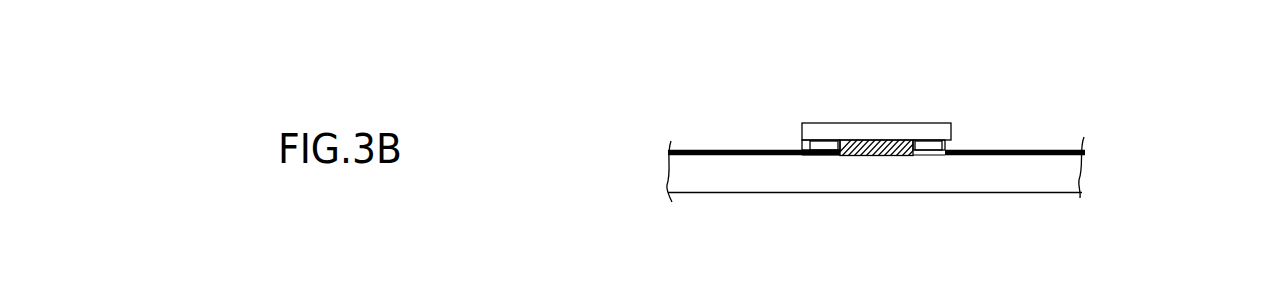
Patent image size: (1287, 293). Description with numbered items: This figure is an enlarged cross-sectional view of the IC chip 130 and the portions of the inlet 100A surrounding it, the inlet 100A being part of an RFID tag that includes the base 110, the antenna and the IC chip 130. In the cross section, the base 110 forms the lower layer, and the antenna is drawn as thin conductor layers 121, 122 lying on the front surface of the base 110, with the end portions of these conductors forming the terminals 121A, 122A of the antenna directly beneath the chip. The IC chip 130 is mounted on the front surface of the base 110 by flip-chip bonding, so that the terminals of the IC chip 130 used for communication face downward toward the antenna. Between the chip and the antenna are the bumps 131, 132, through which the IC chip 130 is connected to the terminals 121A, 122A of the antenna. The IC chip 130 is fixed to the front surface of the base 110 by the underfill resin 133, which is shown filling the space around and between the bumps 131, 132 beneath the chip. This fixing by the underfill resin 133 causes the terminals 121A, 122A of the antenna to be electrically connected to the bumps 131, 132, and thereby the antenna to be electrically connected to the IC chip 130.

The inlet 100A is at (1076, 127).
The base 110 is at (1057, 170).
The first wiring electrode 121 is at (722, 149).
The second wiring electrode 122 is at (1047, 148).
The terminal 121A is at (823, 156).
The terminal 122A is at (934, 156).
The IC chip 130 is at (873, 130).
The bump 131 is at (823, 145).
The bump 132 is at (928, 145).
The underfill resin 133 is at (800, 147).